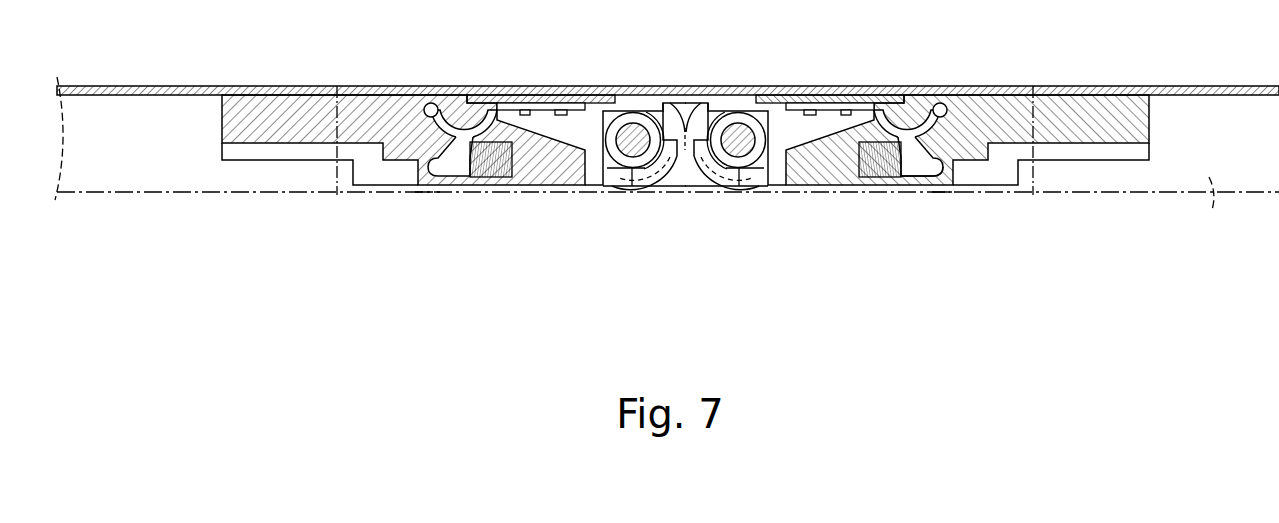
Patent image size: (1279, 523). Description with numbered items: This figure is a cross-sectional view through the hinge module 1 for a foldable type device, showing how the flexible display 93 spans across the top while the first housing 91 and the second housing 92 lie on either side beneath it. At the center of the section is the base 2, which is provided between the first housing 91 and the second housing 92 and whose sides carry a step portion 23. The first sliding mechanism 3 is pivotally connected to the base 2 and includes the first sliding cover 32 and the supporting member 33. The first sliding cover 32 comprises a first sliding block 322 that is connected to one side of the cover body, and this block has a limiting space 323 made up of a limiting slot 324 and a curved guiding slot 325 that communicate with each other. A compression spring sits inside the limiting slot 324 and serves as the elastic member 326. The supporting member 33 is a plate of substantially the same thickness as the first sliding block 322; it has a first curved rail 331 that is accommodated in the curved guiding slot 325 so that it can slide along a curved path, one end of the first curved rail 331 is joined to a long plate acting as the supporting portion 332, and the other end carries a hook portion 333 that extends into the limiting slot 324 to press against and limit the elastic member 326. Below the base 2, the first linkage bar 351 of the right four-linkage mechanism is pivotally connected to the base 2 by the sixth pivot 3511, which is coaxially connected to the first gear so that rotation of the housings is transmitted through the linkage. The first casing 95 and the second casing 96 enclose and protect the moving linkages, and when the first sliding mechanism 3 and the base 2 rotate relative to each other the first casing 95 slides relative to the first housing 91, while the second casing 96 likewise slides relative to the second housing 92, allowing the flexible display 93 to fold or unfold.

The hinge module 1 is at (600, 230).
The base 2 is at (675, 185).
The step portion 23 is at (770, 86).
The first sliding mechanism 3 is at (982, 189).
The first sliding cover 32 is at (1001, 195).
The first sliding block 322 is at (1078, 127).
The limiting space 323 is at (988, 243).
The limiting slot 324 is at (925, 178).
The curved guiding slot 325 is at (948, 118).
The elastic member 326 is at (862, 178).
The supporting member 33 is at (918, 204).
The first curved rail 331 is at (913, 118).
The supporting portion 332 is at (830, 103).
The hook portion 333 is at (903, 178).
The first linkage bar 351 is at (771, 173).
The sixth pivot 3511 is at (745, 152).
The first housing 91 is at (1213, 210).
The second housing 92 is at (210, 178).
The flexible display 93 is at (550, 86).
The first casing 95 is at (943, 192).
The second casing 96 is at (427, 193).